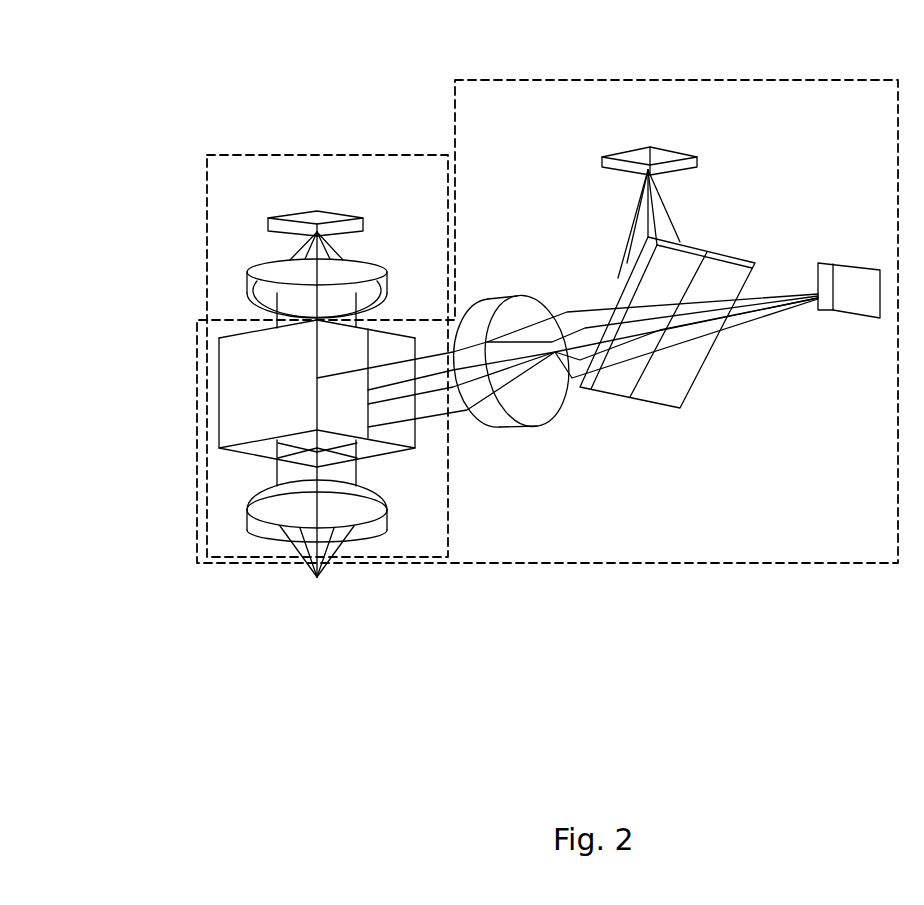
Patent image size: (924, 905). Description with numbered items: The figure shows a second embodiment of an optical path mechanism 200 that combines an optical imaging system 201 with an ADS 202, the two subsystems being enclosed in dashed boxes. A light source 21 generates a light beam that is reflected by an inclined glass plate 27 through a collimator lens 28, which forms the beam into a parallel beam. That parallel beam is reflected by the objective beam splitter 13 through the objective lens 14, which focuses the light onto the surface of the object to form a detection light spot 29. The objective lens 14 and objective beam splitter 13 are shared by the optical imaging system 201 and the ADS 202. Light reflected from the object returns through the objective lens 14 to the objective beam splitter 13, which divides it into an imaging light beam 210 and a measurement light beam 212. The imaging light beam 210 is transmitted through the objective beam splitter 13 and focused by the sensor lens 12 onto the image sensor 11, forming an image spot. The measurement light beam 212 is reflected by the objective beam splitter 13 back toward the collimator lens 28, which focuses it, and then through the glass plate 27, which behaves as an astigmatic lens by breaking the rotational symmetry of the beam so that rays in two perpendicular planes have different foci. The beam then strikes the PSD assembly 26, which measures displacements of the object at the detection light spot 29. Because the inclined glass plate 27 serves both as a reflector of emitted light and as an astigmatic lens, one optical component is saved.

The optical path mechanism 200 is at (185, 117).
The optical imaging system 201 is at (247, 190).
The ADS 202 is at (886, 559).
The imaging light beam 210 is at (264, 320).
The measurement light beam 212 is at (423, 329).
The image sensor 11 is at (325, 220).
The sensor lens 12 is at (354, 268).
The objective beam splitter 13 is at (405, 432).
The objective lens 14 is at (367, 507).
The detection light spot 29 is at (320, 577).
The collimator lens 28 is at (499, 416).
The light source 21 is at (670, 152).
The inclined glass plate 27 is at (672, 385).
The PSD assembly 26 is at (838, 265).